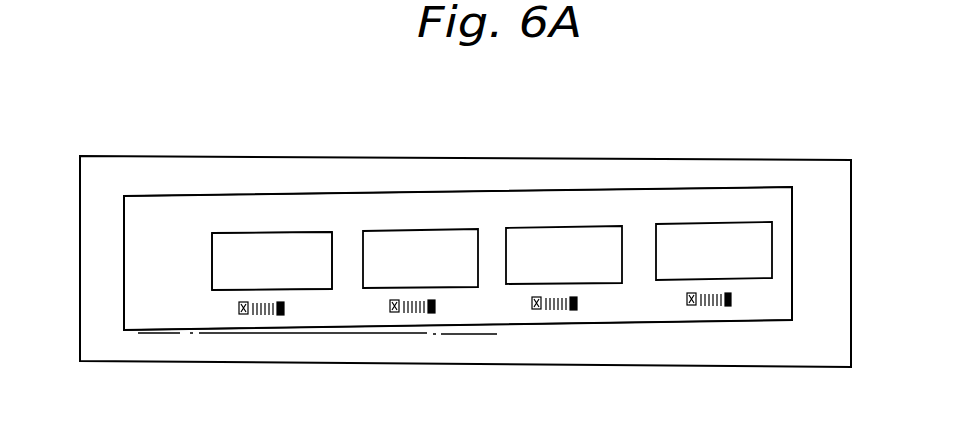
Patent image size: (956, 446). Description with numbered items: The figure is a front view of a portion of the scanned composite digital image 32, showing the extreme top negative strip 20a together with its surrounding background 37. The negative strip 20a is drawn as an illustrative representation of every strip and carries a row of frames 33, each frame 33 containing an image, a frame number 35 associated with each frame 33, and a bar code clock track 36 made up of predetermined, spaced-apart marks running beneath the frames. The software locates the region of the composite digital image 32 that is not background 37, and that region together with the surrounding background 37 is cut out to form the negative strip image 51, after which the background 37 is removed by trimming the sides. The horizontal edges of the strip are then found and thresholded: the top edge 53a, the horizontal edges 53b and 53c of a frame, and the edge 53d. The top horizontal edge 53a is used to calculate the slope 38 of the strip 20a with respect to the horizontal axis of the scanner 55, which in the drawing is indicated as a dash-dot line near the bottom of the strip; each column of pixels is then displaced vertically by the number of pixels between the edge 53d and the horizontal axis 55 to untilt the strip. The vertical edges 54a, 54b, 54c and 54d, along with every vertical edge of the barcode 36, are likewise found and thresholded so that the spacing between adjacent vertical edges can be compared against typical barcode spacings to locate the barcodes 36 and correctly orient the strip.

The scanned composite digital image 32 is at (507, 134).
The negative strip 20a is at (792, 253).
The frame 33 is at (322, 222).
The frame number 35 is at (222, 310).
The bar code clock track 36 is at (436, 305).
The background 37 is at (726, 347).
The slope 38 is at (452, 330).
The negative strip image 51 is at (573, 367).
The top edge 53a is at (190, 196).
The horizontal edge 53b is at (227, 233).
The horizontal edge 53c is at (287, 289).
The edge 53d is at (245, 331).
The vertical edge 54a is at (123, 263).
The vertical edge 54b is at (212, 262).
The vertical edge 54c is at (332, 250).
The vertical edge 54d is at (792, 228).
The horizontal axis of the scanner 55 is at (354, 337).